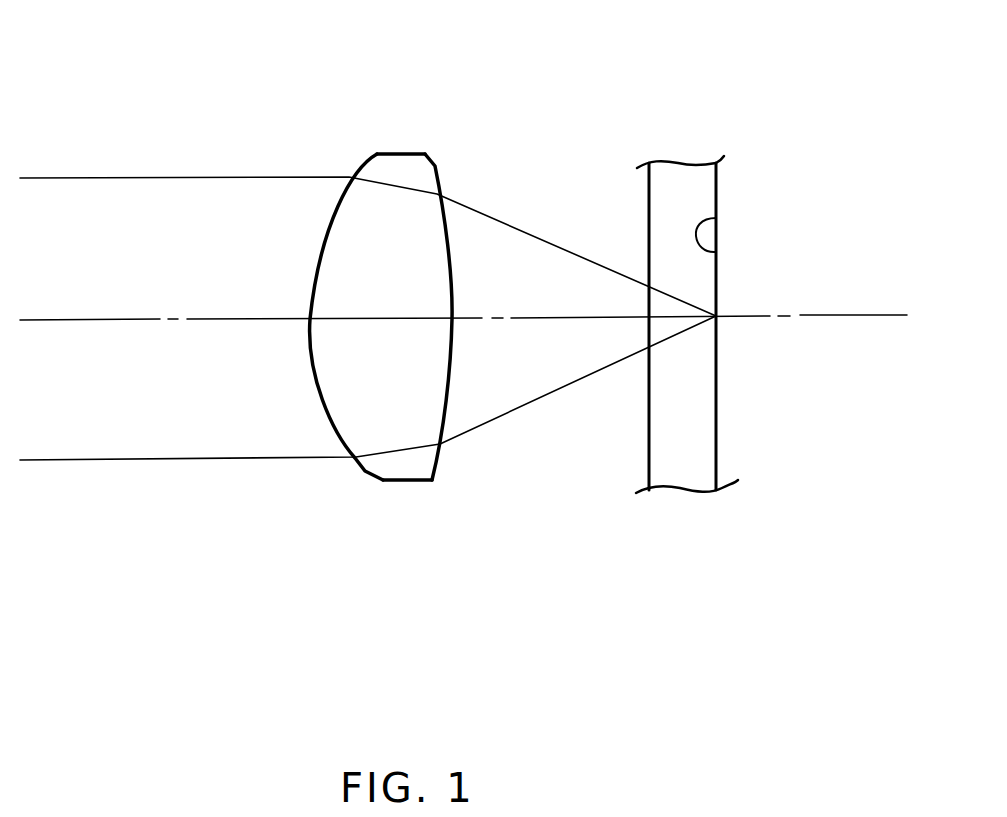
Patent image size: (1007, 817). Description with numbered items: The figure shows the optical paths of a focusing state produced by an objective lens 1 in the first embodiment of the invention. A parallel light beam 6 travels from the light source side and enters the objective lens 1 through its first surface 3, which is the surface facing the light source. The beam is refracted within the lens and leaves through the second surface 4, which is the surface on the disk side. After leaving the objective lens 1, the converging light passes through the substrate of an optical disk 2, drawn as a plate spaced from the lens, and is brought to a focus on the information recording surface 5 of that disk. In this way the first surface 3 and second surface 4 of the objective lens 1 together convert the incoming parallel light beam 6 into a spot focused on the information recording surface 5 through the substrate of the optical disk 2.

The objective lens 1 is at (400, 248).
The optical disk 2 is at (682, 184).
The first surface 3 is at (330, 203).
The second surface 4 is at (437, 178).
The information recording surface 5 is at (716, 220).
The parallel light beam 6 is at (230, 461).